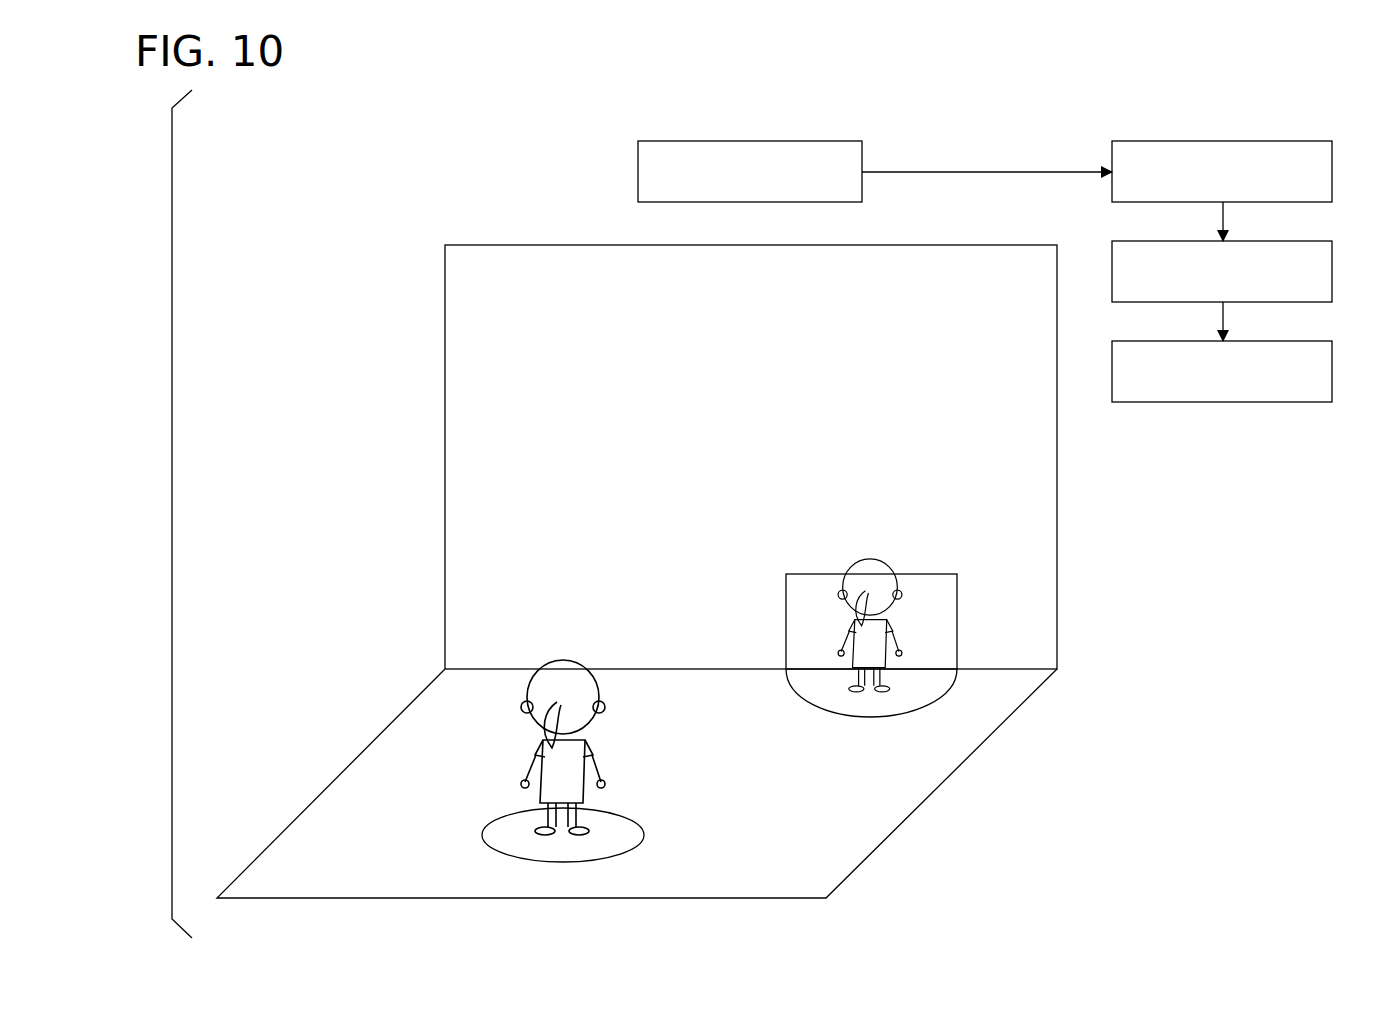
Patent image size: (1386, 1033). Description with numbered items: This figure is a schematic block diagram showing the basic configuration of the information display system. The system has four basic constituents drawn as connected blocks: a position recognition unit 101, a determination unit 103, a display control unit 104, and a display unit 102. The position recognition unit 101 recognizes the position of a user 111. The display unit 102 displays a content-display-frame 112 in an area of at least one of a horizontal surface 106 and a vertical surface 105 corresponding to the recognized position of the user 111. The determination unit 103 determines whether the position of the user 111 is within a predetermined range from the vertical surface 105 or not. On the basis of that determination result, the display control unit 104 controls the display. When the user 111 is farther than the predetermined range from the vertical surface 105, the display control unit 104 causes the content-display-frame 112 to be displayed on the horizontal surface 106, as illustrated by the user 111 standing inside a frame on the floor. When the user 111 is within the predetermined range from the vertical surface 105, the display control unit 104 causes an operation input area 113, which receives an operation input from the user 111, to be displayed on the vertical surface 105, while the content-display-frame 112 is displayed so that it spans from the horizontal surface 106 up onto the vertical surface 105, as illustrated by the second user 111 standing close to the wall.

The position recognition unit 101 is at (790, 141).
The display unit 102 is at (1262, 341).
The determination unit 103 is at (1262, 141).
The display control unit 104 is at (1262, 241).
The vertical surface 105 is at (453, 460).
The horizontal surface 106 is at (340, 783).
The user 111 is at (556, 658).
The content-display-frame 112 is at (486, 835).
The operation input area 113 is at (943, 612).